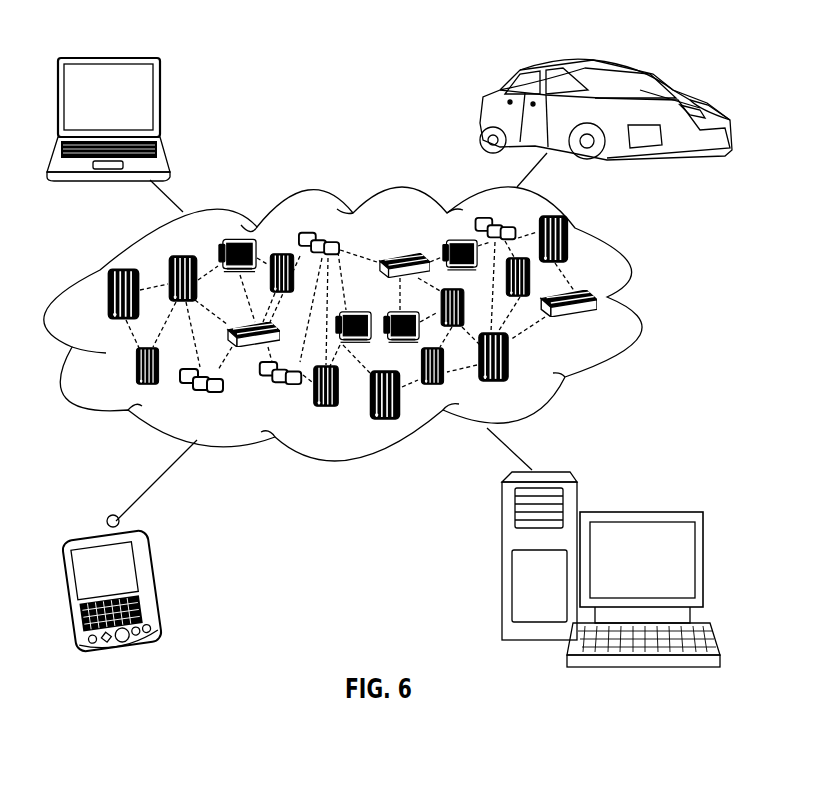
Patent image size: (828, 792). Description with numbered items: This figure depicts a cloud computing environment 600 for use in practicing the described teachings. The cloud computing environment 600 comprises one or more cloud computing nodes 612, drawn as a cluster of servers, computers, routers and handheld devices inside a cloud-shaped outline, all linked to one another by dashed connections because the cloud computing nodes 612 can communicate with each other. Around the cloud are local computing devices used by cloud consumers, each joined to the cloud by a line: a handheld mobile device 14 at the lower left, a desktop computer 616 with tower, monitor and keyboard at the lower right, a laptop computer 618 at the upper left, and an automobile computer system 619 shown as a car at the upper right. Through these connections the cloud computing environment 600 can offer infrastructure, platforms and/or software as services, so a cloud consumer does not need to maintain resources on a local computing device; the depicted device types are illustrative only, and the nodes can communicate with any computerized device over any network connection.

The cloud computing environment 600 is at (378, 84).
The cloud computing nodes 612 is at (364, 324).
The mobile device 14 is at (153, 583).
The desktop computer 616 is at (640, 510).
The laptop computer 618 is at (160, 97).
The automobile computer system 619 is at (482, 120).